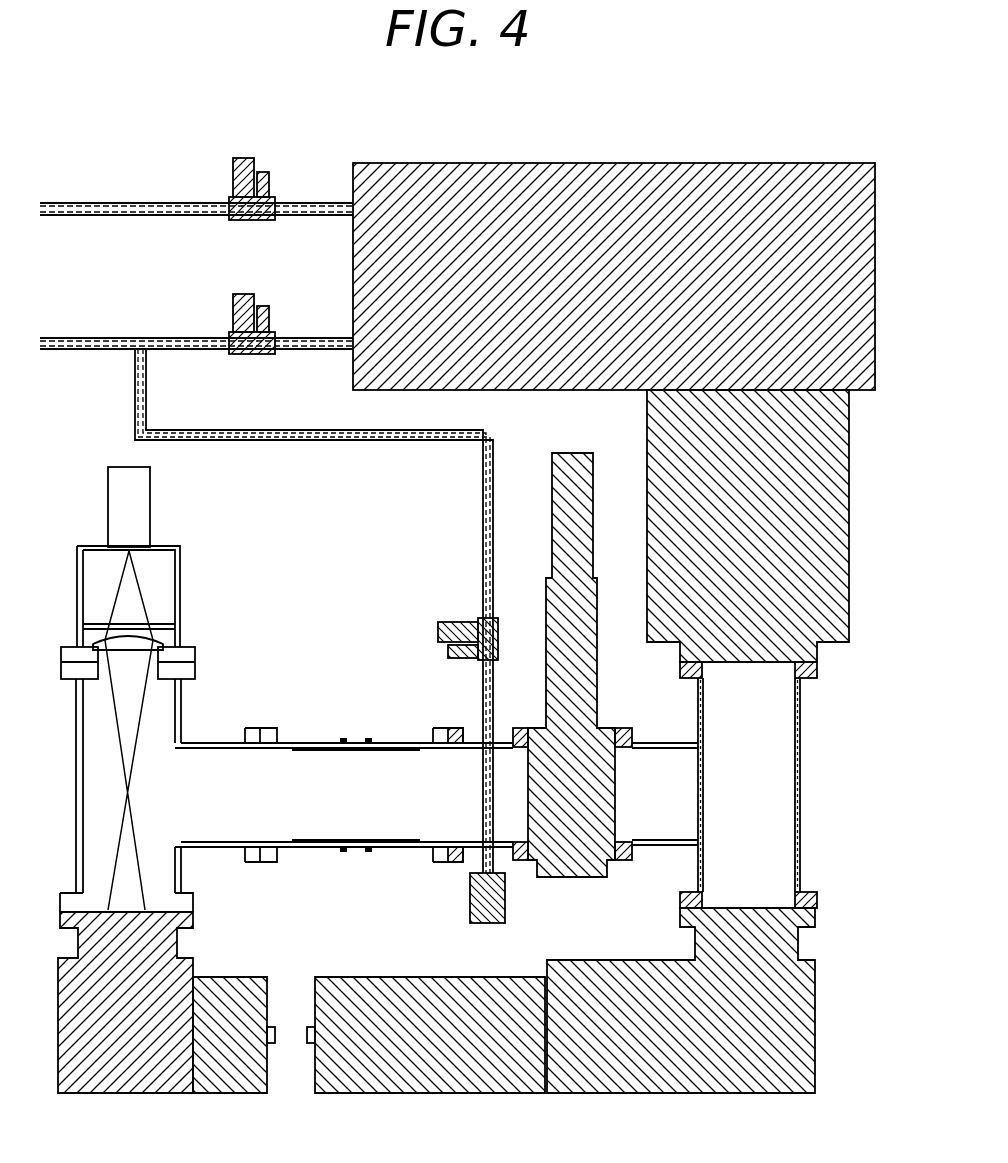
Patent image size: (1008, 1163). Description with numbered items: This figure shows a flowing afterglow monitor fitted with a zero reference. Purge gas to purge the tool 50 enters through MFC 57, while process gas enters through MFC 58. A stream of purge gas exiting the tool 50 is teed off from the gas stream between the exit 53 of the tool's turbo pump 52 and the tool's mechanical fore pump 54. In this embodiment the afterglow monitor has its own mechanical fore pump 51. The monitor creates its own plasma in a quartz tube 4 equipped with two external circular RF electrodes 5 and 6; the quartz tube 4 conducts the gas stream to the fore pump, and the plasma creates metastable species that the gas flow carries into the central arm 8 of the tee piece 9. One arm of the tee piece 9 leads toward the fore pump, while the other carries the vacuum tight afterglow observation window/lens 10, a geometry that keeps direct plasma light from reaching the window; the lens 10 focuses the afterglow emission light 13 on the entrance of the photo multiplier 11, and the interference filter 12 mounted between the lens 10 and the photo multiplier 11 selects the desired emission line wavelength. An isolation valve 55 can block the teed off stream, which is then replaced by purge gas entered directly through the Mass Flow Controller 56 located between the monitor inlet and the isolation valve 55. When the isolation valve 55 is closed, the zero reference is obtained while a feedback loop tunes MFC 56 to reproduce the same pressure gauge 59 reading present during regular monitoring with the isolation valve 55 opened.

The quartz tube 4 is at (320, 741).
The external circular RF electrode 5 is at (370, 738).
The external circular RF electrode 6 is at (343, 738).
The central arm 8 is at (197, 818).
The tee piece 9 is at (75, 797).
The afterglow observation window/lens 10 is at (158, 641).
The photo multiplier 11 is at (142, 518).
The interference filter 12 is at (93, 623).
The light beam 13 is at (132, 795).
The tool 50 is at (812, 372).
The mechanical fore pump 51 is at (150, 943).
The turbo pump 52 is at (812, 510).
The exit 53 is at (773, 713).
The mechanical fore pump 54 is at (763, 960).
The isolation valve 55 is at (593, 795).
The Mass Flow Controller 56 is at (477, 618).
The Mass Flow Controller 57 is at (232, 322).
The Mass Flow Controller 58 is at (232, 186).
The pressure gauge 59 is at (493, 925).